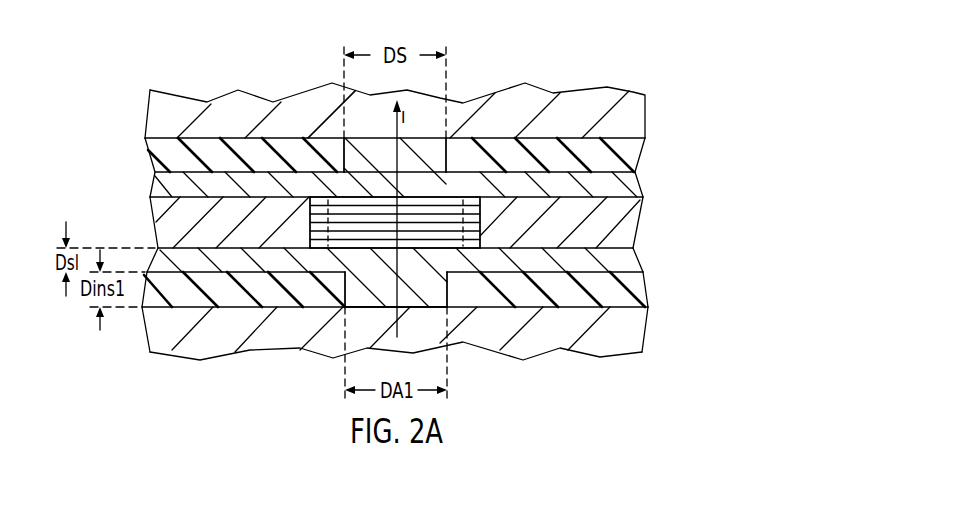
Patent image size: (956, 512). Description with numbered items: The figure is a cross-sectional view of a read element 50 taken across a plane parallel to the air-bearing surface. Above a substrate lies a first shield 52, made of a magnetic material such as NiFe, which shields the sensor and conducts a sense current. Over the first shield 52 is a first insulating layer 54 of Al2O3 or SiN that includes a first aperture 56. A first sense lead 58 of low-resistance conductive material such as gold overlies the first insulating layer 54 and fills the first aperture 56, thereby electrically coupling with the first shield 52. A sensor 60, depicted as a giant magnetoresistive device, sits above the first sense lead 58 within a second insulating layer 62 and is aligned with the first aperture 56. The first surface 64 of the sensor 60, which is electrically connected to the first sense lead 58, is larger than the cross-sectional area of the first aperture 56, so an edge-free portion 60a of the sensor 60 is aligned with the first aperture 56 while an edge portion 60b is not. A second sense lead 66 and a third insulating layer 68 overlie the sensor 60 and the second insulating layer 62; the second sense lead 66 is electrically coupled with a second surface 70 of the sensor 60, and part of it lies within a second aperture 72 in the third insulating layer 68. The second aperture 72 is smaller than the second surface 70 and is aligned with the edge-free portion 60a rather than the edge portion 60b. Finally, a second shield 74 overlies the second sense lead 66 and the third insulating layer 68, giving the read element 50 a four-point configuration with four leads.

The read element 50 is at (662, 75).
The first shield 52 is at (630, 331).
The first insulating layer 54 is at (637, 291).
The first aperture 56 is at (386, 306).
The first sense lead 58 is at (620, 260).
The sensor 60 is at (425, 222).
The edge-free portion 60a is at (423, 248).
The edge portion 60b is at (311, 240).
The second insulating layer 62 is at (153, 215).
The first surface 64 is at (364, 248).
The second sense lead 66 is at (627, 184).
The third insulating layer 68 is at (628, 152).
The second surface 70 is at (430, 200).
The second aperture 72 is at (364, 146).
The second shield 74 is at (326, 100).